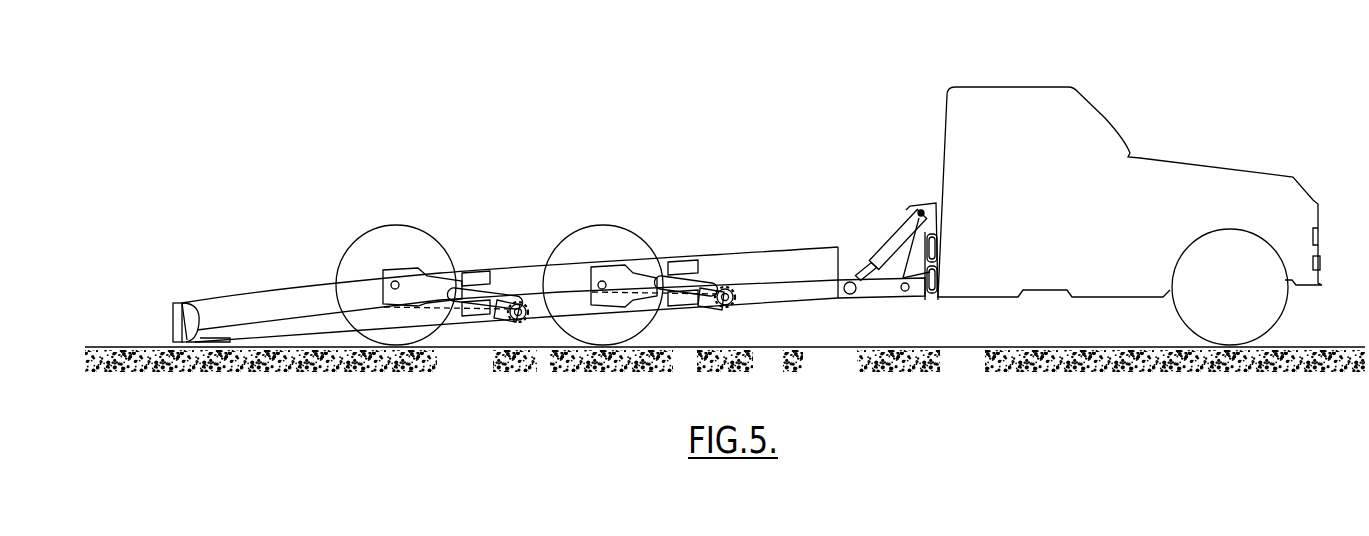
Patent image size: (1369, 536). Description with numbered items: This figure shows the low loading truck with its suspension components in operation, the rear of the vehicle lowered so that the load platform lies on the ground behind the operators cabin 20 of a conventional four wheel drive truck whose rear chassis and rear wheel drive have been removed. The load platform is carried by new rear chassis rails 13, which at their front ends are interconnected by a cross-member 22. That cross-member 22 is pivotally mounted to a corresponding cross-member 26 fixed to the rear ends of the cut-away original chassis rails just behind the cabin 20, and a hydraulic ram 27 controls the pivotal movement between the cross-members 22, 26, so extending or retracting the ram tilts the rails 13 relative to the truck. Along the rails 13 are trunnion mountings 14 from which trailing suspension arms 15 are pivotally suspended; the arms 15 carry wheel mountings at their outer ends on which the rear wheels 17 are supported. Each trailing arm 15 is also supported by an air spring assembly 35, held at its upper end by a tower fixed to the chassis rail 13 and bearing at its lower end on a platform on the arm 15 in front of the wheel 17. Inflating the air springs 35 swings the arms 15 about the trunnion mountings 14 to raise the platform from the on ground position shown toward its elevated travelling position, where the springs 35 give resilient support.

The rear chassis rail 13 is at (790, 293).
The trunnion mounting 14 is at (524, 324).
The trailing suspension arm 15 is at (503, 313).
The rear wheel 17 is at (405, 234).
The operators cabin 20 is at (1078, 136).
The cross-member 22 is at (932, 300).
The cross-member 26 is at (938, 247).
The hydraulic ram 27 is at (893, 243).
The air spring assembly 35 is at (497, 290).